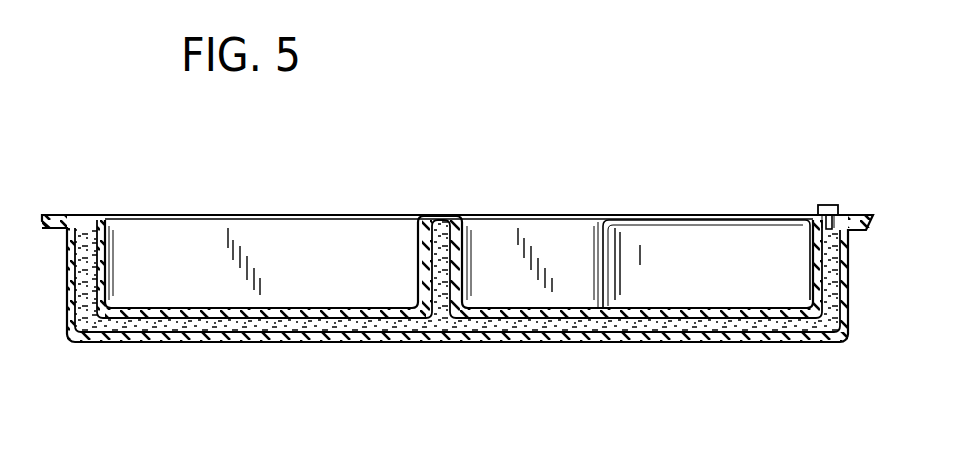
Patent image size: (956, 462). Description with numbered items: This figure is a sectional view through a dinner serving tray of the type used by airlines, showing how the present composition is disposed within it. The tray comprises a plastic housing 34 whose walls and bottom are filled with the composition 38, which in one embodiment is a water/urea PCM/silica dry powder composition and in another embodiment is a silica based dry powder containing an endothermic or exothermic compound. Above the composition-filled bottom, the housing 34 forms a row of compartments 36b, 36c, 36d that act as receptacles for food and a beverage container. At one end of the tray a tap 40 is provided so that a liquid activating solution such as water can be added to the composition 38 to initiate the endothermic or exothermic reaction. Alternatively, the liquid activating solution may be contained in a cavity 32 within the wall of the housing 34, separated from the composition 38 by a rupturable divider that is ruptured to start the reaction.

The cavity 32 is at (92, 250).
The plastic housing 34 is at (873, 230).
The compartment 36b is at (357, 235).
The compartment 36c is at (574, 234).
The compartment 36d is at (712, 250).
The composition 38 is at (548, 322).
The tap 40 is at (830, 205).